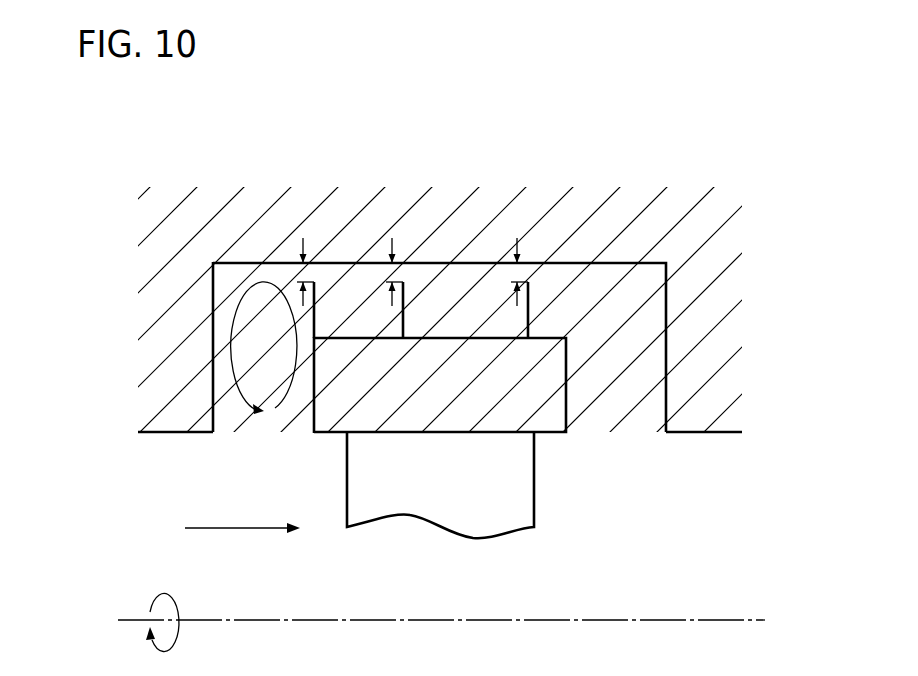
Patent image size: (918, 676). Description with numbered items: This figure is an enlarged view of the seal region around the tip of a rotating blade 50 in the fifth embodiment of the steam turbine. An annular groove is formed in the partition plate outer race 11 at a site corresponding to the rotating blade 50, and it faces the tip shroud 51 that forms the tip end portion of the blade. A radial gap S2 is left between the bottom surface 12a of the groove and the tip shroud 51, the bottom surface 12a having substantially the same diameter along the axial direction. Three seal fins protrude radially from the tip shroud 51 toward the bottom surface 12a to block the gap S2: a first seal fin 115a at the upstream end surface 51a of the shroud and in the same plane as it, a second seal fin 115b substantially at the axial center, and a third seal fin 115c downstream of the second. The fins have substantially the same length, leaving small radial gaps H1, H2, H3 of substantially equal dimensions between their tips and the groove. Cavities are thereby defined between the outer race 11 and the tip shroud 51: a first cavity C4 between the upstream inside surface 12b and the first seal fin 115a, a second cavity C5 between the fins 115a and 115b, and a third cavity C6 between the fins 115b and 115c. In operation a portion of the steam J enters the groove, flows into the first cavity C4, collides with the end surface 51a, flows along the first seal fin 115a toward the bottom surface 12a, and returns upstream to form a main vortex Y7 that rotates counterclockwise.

The partition plate outer race 11 is at (737, 238).
The bottom surface of the annular groove 12a is at (250, 266).
The inside surface of the annular groove 12b is at (213, 407).
The first seal fin 115a is at (315, 296).
The second seal fin 115b is at (404, 294).
The third seal fin 115c is at (530, 295).
The small gap H1 is at (300, 278).
The small gap H2 is at (395, 290).
The small gap H3 is at (518, 290).
The tip shroud 51 is at (566, 383).
The end surface 51a is at (314, 408).
The rotating blade 50 is at (535, 478).
The first cavity C4 is at (225, 310).
The second cavity C5 is at (358, 308).
The third cavity C6 is at (465, 308).
The gap S2 is at (545, 310).
The main vortex Y7 is at (232, 350).
The steam J is at (236, 528).